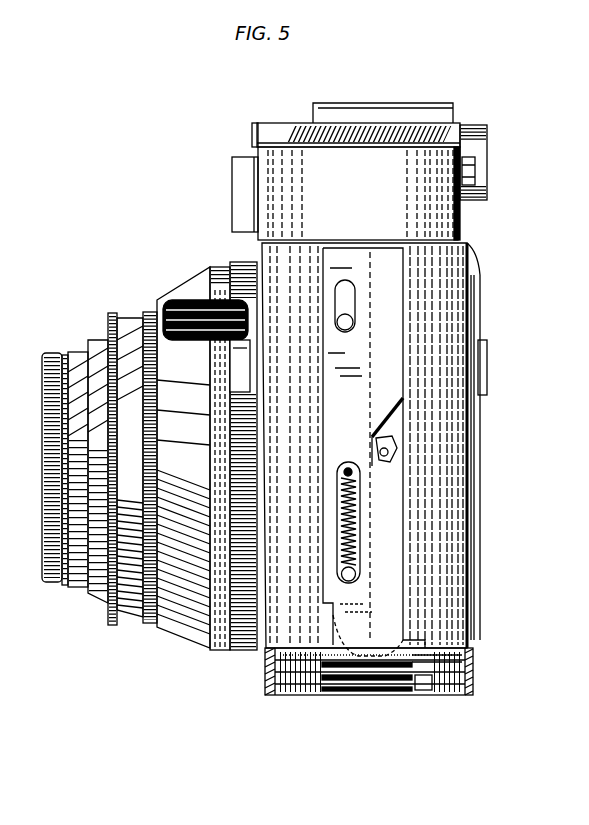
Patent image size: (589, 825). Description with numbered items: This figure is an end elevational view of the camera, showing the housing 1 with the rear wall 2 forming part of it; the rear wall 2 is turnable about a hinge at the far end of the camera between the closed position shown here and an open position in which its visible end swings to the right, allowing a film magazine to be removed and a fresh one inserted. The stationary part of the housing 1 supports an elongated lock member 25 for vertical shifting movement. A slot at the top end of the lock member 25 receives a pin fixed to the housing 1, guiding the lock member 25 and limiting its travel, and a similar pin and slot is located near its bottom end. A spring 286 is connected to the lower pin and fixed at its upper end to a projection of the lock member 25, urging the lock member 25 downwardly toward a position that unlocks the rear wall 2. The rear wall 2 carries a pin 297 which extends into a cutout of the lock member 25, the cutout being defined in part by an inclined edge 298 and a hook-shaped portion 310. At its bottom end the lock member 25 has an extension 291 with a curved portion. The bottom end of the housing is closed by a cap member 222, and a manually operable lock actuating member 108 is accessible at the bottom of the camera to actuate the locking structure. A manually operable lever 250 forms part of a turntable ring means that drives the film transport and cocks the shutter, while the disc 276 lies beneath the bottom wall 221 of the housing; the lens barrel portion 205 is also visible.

The housing 1 is at (257, 246).
The rear wall 2 is at (460, 260).
The lock member 25 is at (394, 301).
The lock actuating member 108 is at (430, 685).
The lens mount 205 is at (170, 632).
The bottom wall 221 is at (273, 690).
The cap member 222 is at (474, 688).
The manually operable lever 250 is at (172, 292).
The disc 276 is at (470, 655).
The spring 286 is at (340, 520).
The extension 291 is at (340, 628).
The pin 297 is at (370, 440).
The inclined edge 298 is at (404, 410).
The hook-shaped portion 310 is at (386, 452).